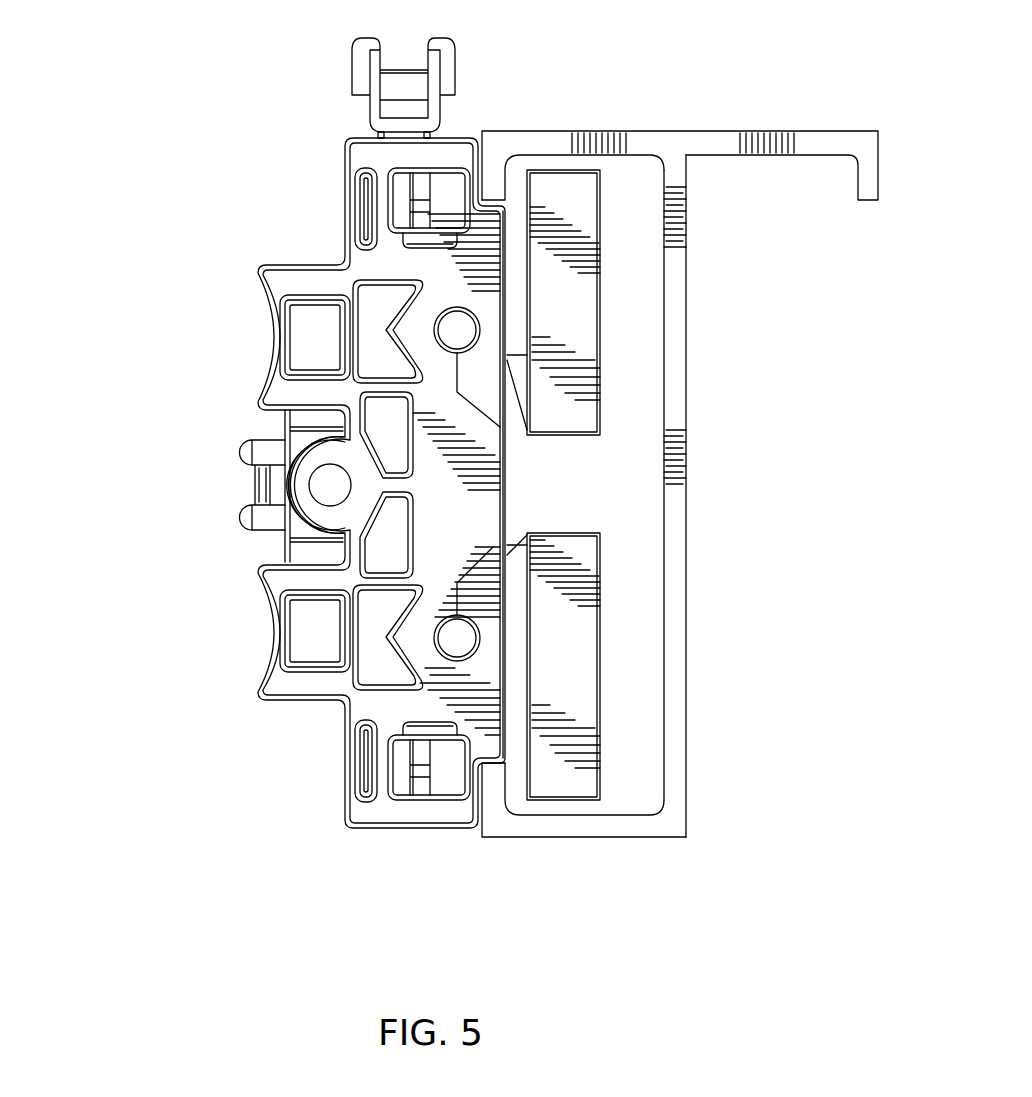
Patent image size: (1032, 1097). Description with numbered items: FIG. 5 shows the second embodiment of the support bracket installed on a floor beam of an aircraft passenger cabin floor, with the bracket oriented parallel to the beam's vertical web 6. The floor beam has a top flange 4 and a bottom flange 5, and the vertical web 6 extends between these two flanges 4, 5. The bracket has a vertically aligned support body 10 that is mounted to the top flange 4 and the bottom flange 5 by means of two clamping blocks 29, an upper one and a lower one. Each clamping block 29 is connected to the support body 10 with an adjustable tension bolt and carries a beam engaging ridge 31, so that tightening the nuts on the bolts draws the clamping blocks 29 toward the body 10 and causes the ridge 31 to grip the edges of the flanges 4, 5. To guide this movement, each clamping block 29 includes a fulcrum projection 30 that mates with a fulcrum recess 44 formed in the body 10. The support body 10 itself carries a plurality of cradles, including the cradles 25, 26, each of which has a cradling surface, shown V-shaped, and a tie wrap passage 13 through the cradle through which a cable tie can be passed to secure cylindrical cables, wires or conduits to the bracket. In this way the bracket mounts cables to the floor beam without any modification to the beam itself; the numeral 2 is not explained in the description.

The housing 2 is at (342, 847).
The top flange 4 is at (740, 130).
The bottom flange 5 is at (635, 835).
The vertical web 6 is at (688, 573).
The support body 10 is at (485, 464).
The tie wrap passage 13 is at (400, 111).
The cradle 25 is at (278, 333).
The cradle 26 is at (280, 485).
The clamping block 29 is at (590, 247).
The fulcrum projection 30 is at (622, 484).
The beam engaging ridge 31 is at (523, 180).
The fulcrum recess 44 is at (488, 378).